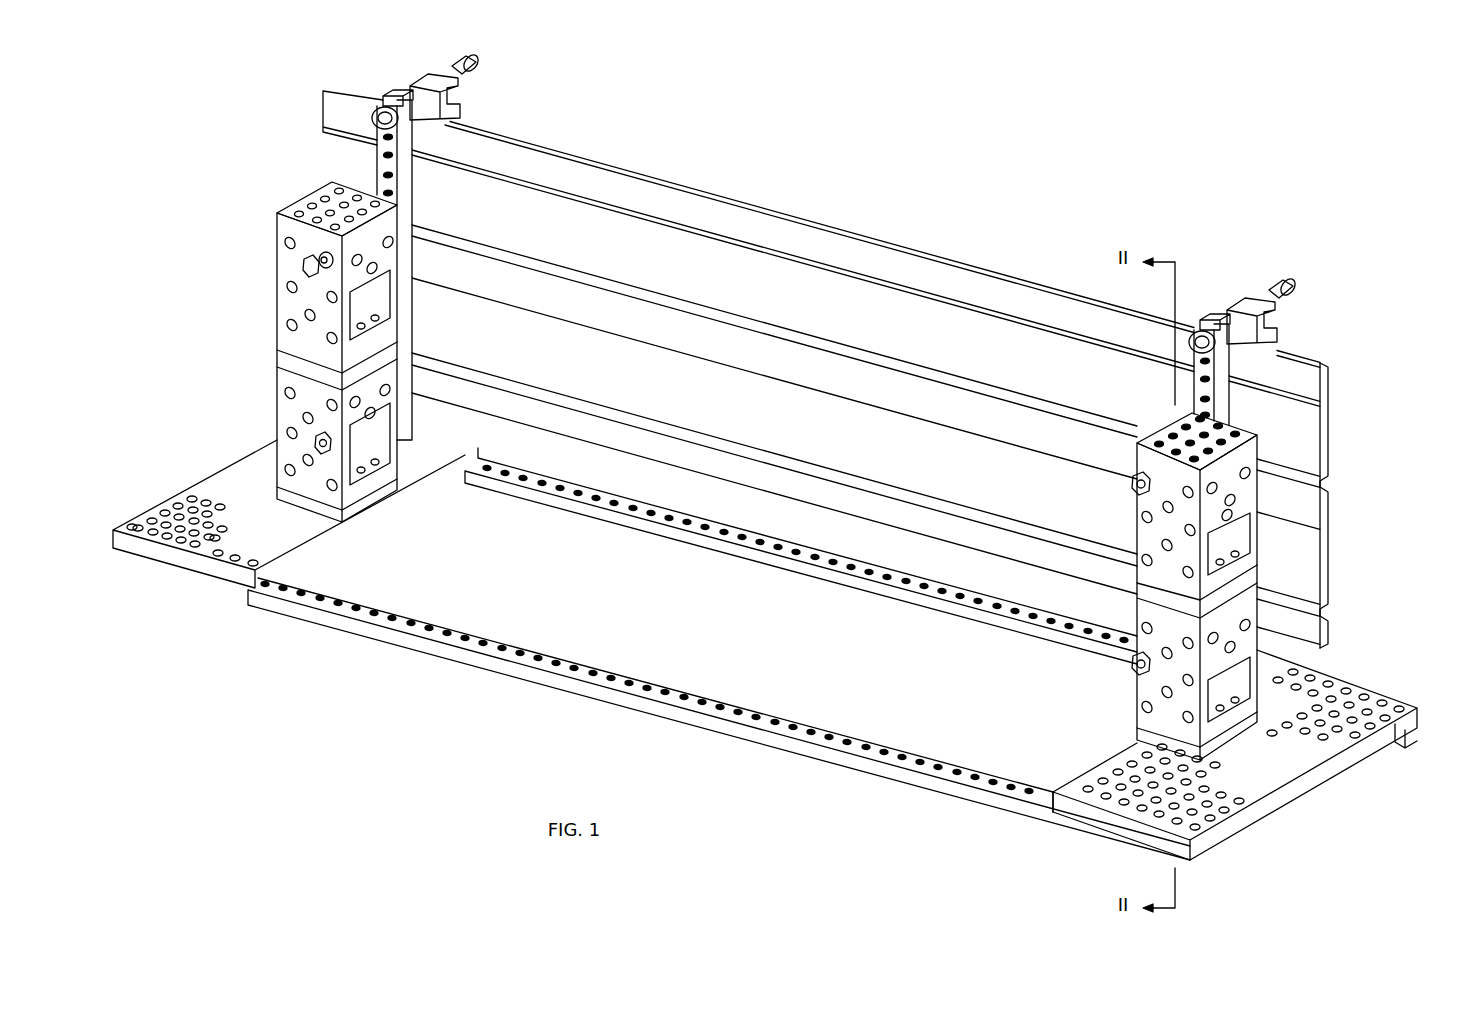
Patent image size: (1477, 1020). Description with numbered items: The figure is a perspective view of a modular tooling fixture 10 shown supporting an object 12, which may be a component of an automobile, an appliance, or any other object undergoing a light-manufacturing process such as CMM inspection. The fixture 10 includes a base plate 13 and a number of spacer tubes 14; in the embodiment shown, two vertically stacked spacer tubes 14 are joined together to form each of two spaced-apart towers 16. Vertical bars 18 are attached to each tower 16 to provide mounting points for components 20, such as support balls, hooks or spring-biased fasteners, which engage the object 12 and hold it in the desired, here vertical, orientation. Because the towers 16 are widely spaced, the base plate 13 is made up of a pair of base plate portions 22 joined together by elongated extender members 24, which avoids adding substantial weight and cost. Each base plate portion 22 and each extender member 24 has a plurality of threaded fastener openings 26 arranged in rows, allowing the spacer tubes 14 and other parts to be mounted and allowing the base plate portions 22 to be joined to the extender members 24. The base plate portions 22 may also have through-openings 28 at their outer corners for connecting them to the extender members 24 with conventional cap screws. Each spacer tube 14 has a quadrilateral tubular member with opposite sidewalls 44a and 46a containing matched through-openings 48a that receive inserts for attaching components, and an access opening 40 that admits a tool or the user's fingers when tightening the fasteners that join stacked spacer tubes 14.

The modular tooling fixture 10 is at (1262, 448).
The object 12 is at (972, 258).
The base plate 13 is at (1406, 700).
The spacer tube 14 is at (281, 293).
The tower 16 is at (300, 208).
The vertical bar 18 is at (1224, 368).
The component 20 is at (424, 78).
The base plate portion 22 is at (198, 490).
The extender member 24 is at (916, 600).
The threaded fastener opening 26 is at (569, 500).
The through-opening 28 is at (1056, 800).
The access opening 40 is at (1246, 536).
The sidewall 44a is at (1153, 711).
The sidewall 46a is at (1258, 646).
The through-opening 48a is at (1255, 471).